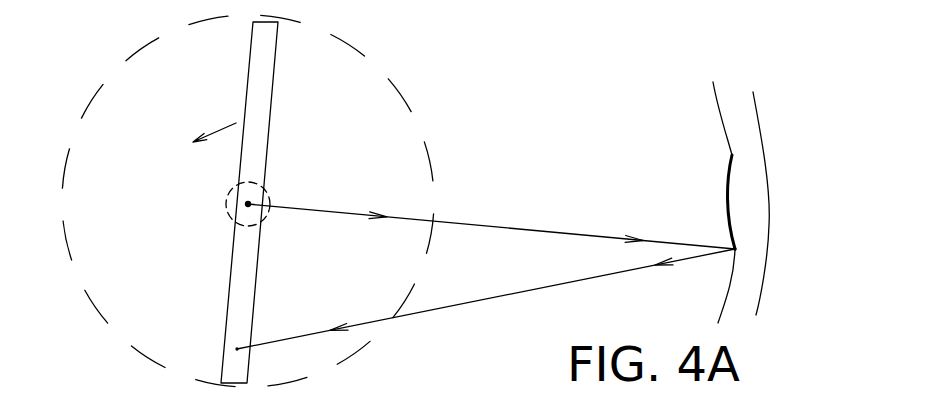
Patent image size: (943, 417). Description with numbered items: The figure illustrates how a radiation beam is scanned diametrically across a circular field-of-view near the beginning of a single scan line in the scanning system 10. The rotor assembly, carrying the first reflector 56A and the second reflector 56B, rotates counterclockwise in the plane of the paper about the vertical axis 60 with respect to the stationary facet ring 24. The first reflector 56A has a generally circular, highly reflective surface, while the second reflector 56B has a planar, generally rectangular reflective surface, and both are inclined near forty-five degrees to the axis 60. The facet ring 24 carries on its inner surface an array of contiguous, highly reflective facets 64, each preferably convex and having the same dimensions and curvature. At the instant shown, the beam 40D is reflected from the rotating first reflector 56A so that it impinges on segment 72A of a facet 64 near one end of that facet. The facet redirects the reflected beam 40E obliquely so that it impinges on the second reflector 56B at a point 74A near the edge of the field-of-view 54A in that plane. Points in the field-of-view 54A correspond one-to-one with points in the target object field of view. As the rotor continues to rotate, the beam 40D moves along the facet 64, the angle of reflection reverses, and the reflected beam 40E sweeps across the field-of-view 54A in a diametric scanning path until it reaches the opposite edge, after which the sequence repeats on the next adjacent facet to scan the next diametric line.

The scanning system 10 is at (165, 260).
The facet ring 24 is at (763, 130).
The beam 40D is at (603, 233).
The reflected beam 40E is at (612, 272).
The field-of-view 54A is at (120, 147).
The first angled reflector 56A is at (270, 203).
The second angled reflector 56B is at (255, 100).
The vertical axis 60 is at (248, 204).
The facet 64 is at (727, 203).
The segment of facet 72A is at (735, 249).
The point on reflector 74A is at (237, 349).